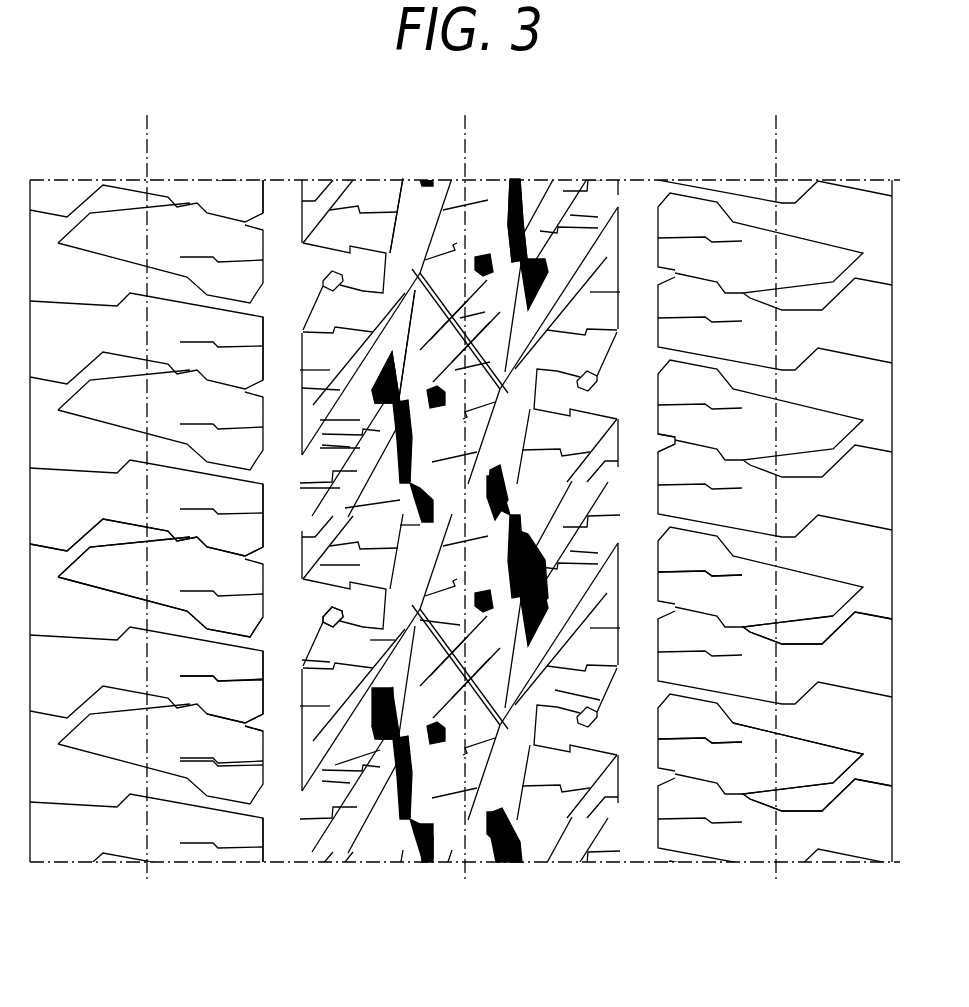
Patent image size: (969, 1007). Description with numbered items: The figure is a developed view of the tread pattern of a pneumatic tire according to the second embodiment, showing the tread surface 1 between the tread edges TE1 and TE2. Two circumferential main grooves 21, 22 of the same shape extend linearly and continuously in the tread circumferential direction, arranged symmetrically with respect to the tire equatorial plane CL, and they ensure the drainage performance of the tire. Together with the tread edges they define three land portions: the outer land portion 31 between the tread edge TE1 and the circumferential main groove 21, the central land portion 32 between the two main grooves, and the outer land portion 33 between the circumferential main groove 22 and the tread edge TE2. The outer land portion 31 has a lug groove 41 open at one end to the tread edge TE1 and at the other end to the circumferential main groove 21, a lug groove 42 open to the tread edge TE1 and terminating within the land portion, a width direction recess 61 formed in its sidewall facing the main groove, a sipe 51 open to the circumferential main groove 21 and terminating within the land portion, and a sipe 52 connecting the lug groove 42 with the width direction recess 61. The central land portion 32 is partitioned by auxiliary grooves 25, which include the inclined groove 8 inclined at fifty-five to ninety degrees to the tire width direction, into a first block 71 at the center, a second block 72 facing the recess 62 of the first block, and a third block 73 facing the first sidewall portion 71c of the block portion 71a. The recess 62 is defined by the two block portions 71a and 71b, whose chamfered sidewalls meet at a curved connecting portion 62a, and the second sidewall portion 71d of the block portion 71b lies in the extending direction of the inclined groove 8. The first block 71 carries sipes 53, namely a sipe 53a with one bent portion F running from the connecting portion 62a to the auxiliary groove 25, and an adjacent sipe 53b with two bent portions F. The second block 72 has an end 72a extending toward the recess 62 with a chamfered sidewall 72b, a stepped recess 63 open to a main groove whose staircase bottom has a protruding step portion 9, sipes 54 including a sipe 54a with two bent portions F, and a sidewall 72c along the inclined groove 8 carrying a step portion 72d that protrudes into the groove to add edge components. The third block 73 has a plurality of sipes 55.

The tread surface 1 is at (550, 145).
The inclined groove 8 is at (393, 284).
The step portion 9 is at (292, 618).
The circumferential main groove 21 is at (282, 205).
The circumferential main groove 22 is at (637, 215).
The auxiliary grooves 25 is at (545, 689).
The outer land portion 31 is at (207, 875).
The central land portion 32 is at (408, 875).
The outer land portion 33 is at (722, 895).
The lug groove 41 is at (190, 619).
The lug groove 42 is at (163, 536).
The sipe 51 is at (175, 665).
The sipe 52 is at (178, 736).
The sipes 53 is at (438, 918).
The sipe 53a is at (495, 866).
The sipe 53b is at (448, 866).
The sipes 54 is at (408, 522).
The sipe 54a is at (302, 568).
The sipes 55 is at (298, 460).
The width direction recess 61 is at (250, 721).
The recess 62 is at (296, 417).
The connecting portion 62a is at (425, 721).
The stepped recess 63 is at (298, 661).
The first block 71 is at (485, 327).
The block portion 71a is at (360, 323).
The block portion 71b is at (500, 474).
The first sidewall portion 71c is at (342, 357).
The second sidewall portion 71d is at (500, 508).
The second block 72 is at (298, 512).
The end 72a is at (343, 497).
The sidewall 72b is at (300, 489).
The sidewall 72c is at (415, 616).
The step portion 72d is at (385, 631).
The third block 73 is at (298, 419).
The bent portion F is at (432, 358).
The tread edge TE1 is at (146, 486).
The tread edge TE2 is at (775, 486).
The tire equatorial plane CL is at (465, 486).